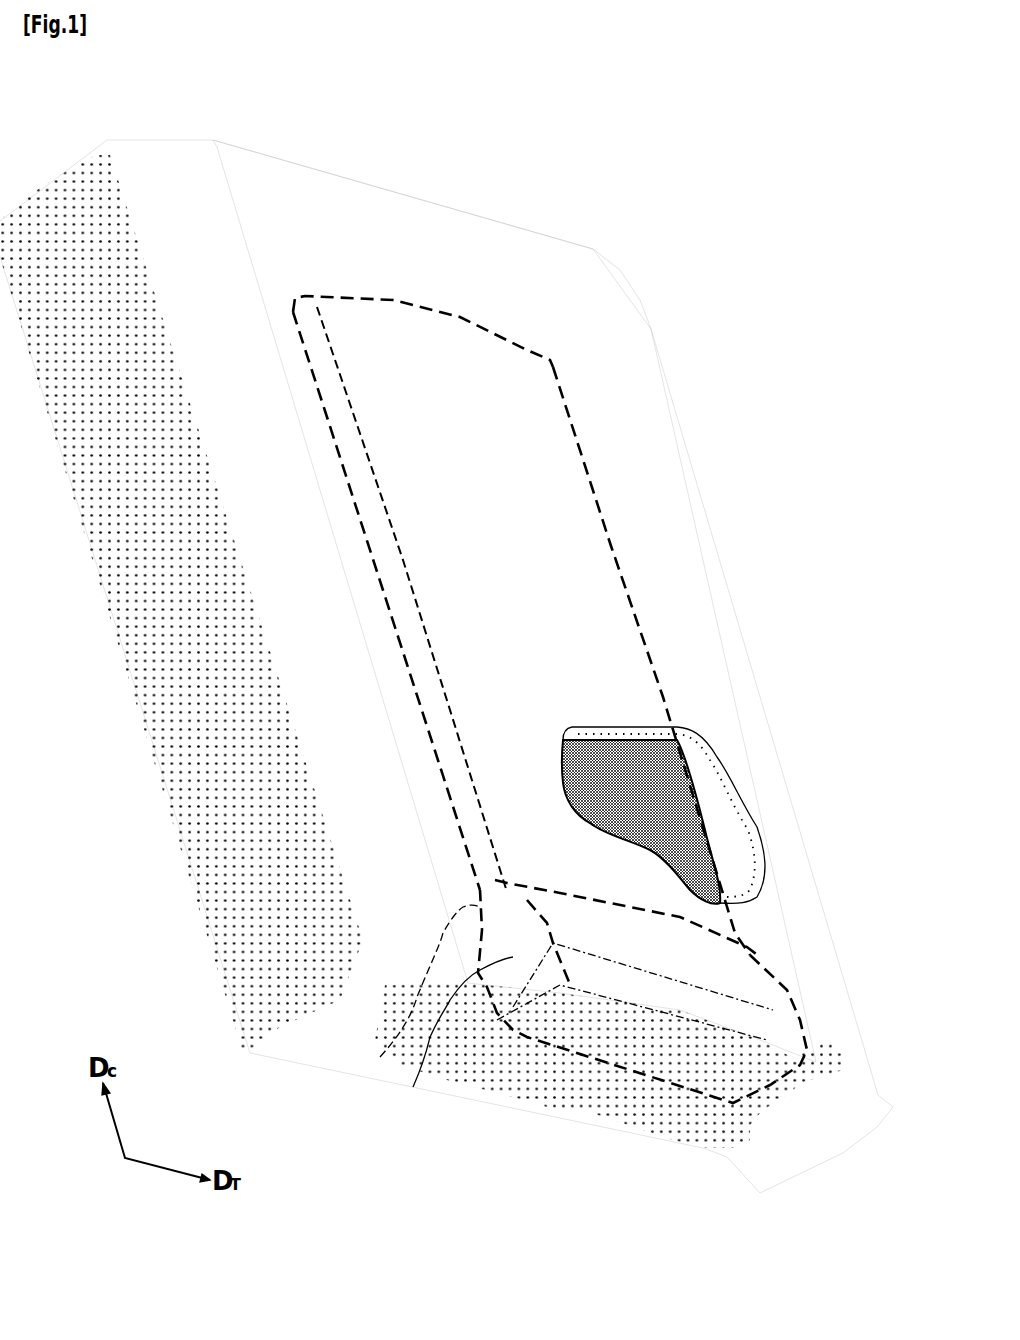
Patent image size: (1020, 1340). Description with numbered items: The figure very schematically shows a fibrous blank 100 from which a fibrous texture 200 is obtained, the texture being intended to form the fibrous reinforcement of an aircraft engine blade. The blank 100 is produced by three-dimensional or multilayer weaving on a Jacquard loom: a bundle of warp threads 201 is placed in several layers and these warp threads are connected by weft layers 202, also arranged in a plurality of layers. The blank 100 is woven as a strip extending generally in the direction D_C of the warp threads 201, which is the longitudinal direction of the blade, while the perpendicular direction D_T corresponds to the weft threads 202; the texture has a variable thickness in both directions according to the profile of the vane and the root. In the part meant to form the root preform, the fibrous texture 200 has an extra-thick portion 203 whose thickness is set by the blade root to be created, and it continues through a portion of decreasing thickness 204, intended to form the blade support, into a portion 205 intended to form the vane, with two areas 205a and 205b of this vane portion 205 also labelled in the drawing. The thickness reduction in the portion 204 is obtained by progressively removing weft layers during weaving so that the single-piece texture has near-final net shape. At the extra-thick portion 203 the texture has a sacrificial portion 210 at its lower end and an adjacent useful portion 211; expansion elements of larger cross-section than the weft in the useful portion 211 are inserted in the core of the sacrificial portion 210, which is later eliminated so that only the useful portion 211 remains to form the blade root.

The fibrous blank 100 is at (535, 128).
The fibrous texture 200 is at (677, 797).
The warp threads 201 is at (260, 157).
The weft layers 202 is at (225, 925).
The extra-thick portion 203 is at (413, 1087).
The portion of decreasing thickness 204 is at (380, 1057).
The vane portion 205 is at (543, 620).
The first edge of electrode sheet 205a is at (433, 703).
The second edge of electrode sheet 205b is at (611, 546).
The sacrificial portion 210 is at (666, 1042).
The useful portion 211 is at (767, 1000).